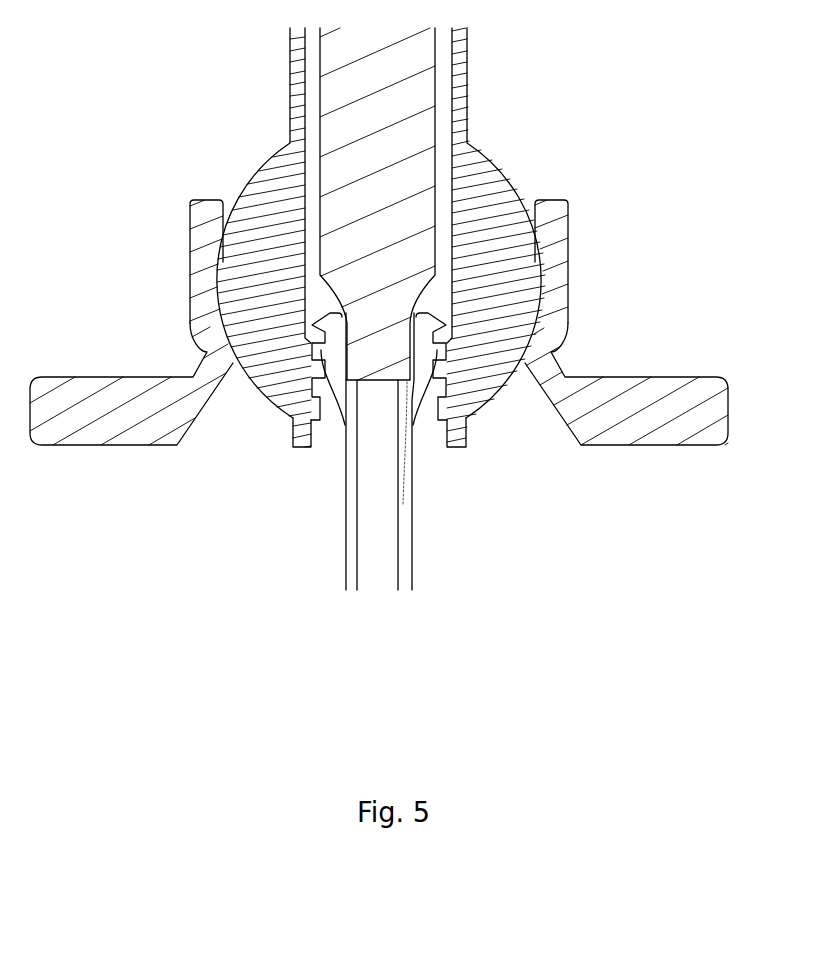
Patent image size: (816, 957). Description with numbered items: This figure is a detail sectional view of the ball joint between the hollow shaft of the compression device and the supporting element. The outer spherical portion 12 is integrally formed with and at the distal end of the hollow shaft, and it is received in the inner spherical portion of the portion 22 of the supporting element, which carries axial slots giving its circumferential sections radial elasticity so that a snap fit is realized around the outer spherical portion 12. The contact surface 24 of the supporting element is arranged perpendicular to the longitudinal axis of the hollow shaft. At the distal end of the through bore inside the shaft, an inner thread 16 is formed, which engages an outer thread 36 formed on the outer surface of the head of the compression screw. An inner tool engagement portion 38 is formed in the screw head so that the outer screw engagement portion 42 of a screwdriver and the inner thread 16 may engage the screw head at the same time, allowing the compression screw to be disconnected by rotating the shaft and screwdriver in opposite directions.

The outer spherical portion 12 is at (260, 213).
The outer screw engagement portion 42 is at (382, 357).
The inner thread 16 is at (429, 448).
The portion 22 is at (568, 265).
The contact surface 24 is at (122, 447).
The outer thread 36 is at (293, 423).
The inner tool engagement portion 38 is at (346, 333).